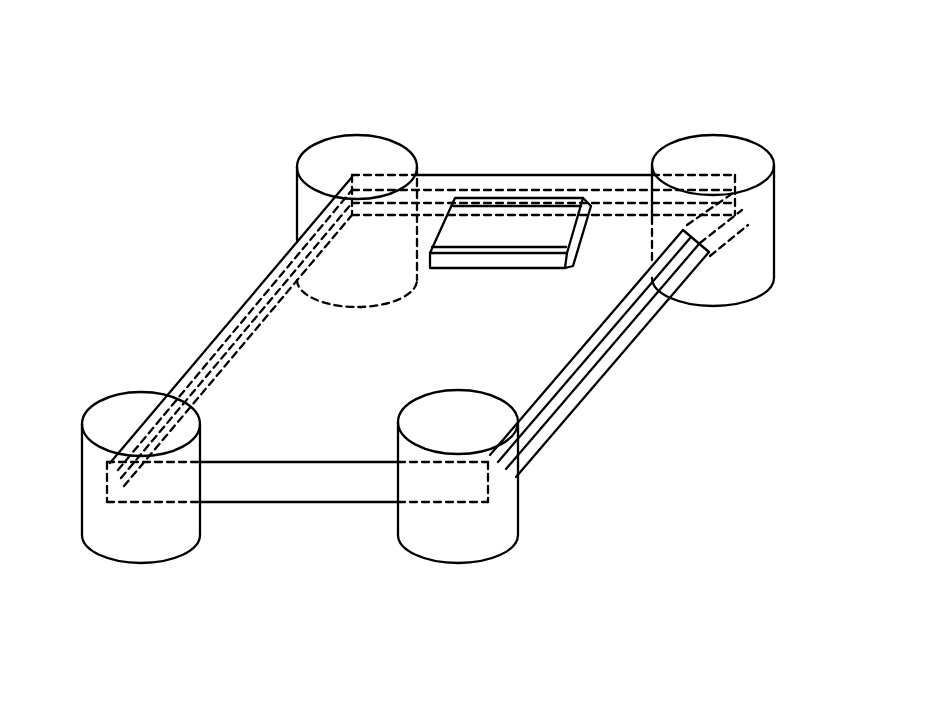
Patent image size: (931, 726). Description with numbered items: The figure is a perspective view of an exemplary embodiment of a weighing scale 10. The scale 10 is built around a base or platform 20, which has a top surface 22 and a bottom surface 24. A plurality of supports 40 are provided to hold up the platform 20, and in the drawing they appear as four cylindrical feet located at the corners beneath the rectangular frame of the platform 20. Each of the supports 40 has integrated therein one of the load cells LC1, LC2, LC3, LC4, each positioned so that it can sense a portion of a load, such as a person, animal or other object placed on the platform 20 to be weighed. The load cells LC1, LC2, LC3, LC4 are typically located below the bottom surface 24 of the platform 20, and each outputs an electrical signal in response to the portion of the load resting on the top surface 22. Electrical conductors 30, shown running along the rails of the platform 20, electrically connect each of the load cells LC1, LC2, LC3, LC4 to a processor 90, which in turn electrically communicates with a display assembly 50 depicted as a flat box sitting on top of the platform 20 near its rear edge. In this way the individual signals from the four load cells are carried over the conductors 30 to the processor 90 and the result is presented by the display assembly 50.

The weighing scale 10 is at (558, 80).
The platform 20 is at (207, 340).
The top surface 22 is at (203, 383).
The bottom surface 24 is at (560, 408).
The electrical conductors 30 is at (628, 193).
The supports 40 is at (323, 166).
The display assembly 50 is at (497, 220).
The processor 90 is at (568, 195).
The load cell LC1 is at (327, 258).
The load cell LC2 is at (747, 277).
The load cell LC3 is at (510, 483).
The load cell LC4 is at (110, 517).